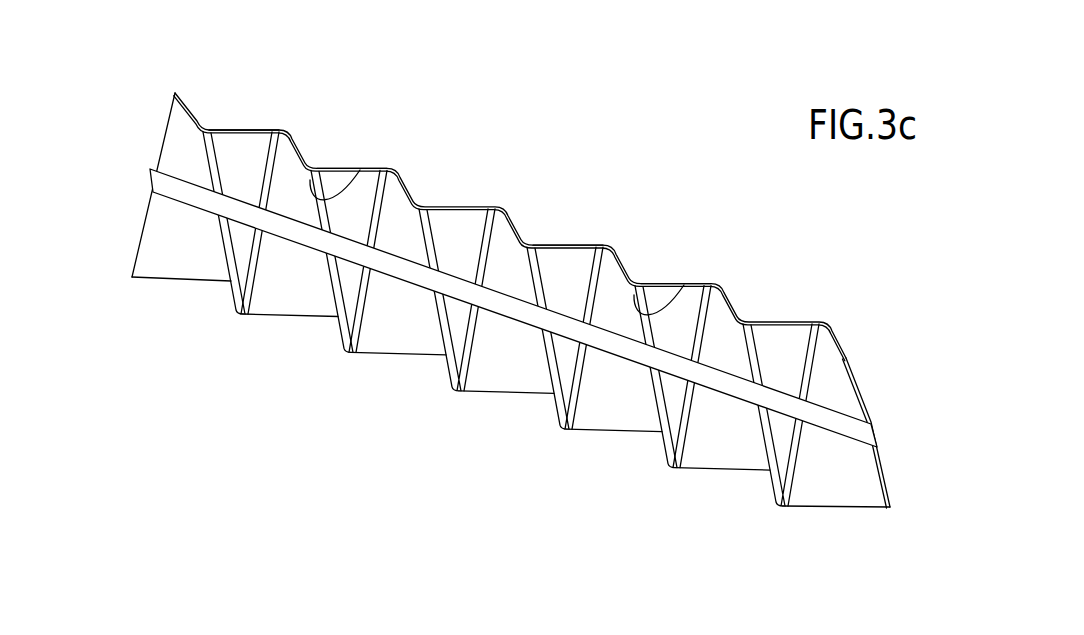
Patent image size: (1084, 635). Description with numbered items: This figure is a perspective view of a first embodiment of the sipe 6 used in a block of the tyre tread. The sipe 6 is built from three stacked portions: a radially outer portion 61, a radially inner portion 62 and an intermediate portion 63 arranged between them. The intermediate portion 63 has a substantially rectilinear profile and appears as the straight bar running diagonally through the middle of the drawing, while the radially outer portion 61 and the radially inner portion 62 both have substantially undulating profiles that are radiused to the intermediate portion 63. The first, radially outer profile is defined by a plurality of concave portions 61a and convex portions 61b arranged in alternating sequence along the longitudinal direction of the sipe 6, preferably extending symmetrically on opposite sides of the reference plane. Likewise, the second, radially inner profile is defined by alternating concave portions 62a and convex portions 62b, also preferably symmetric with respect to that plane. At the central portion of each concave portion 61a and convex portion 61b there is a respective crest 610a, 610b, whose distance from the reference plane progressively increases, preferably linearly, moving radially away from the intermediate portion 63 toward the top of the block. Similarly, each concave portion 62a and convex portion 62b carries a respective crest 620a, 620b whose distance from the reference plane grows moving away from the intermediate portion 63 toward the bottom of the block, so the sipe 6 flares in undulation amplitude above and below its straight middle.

The sipe 6 is at (583, 94).
The radially outer portion 61 is at (137, 98).
The concave portion 61a is at (297, 110).
The convex portion 61b is at (327, 150).
The crest 610a is at (266, 176).
The crest 610b is at (345, 169).
The radially inner portion 62 is at (110, 257).
The concave portion 62a is at (332, 353).
The convex portion 62b is at (217, 325).
The crest 620a is at (333, 288).
The crest 620b is at (259, 313).
The intermediate portion 63 is at (165, 190).